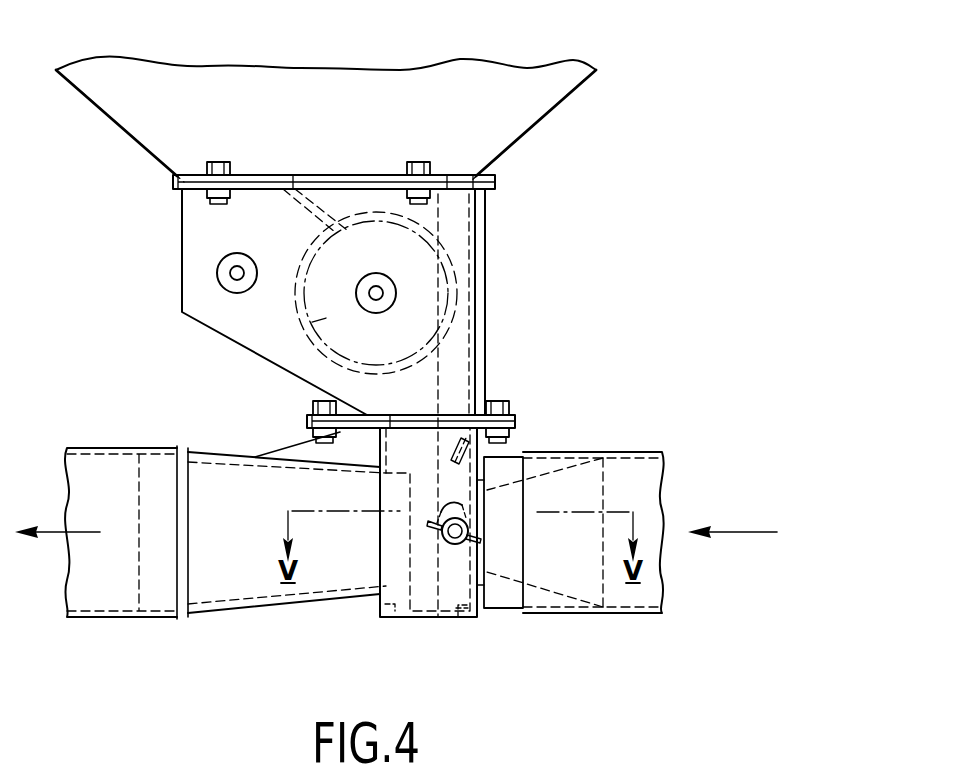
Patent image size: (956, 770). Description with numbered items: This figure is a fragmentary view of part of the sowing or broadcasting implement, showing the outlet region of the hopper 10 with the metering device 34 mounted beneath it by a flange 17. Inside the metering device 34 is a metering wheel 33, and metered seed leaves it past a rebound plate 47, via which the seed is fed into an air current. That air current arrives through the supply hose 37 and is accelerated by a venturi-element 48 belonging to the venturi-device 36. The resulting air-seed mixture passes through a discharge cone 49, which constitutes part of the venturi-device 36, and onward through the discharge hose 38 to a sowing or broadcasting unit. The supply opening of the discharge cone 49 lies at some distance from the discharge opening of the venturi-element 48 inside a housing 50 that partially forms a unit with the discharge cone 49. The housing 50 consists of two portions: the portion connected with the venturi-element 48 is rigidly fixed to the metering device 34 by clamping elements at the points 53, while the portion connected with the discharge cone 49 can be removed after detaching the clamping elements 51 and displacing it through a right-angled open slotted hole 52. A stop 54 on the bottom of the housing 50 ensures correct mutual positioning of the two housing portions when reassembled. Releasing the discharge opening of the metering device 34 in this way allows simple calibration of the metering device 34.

The hopper 10 is at (402, 70).
The mounting flange 17 is at (328, 176).
The metering wheel 33 is at (318, 323).
The metering device 34 is at (500, 297).
The venturi-device 36 is at (337, 661).
The supply hose 37 is at (641, 452).
The discharge hose 38 is at (107, 452).
The rebound plate 47 is at (450, 451).
The venturi-element 48 is at (510, 603).
The discharge cone 49 is at (206, 455).
The housing 50 is at (426, 603).
The clamping elements 51 is at (480, 540).
The right-angled open slotted hole 52 is at (464, 513).
The points 53 is at (427, 416).
The stop 54 is at (459, 620).